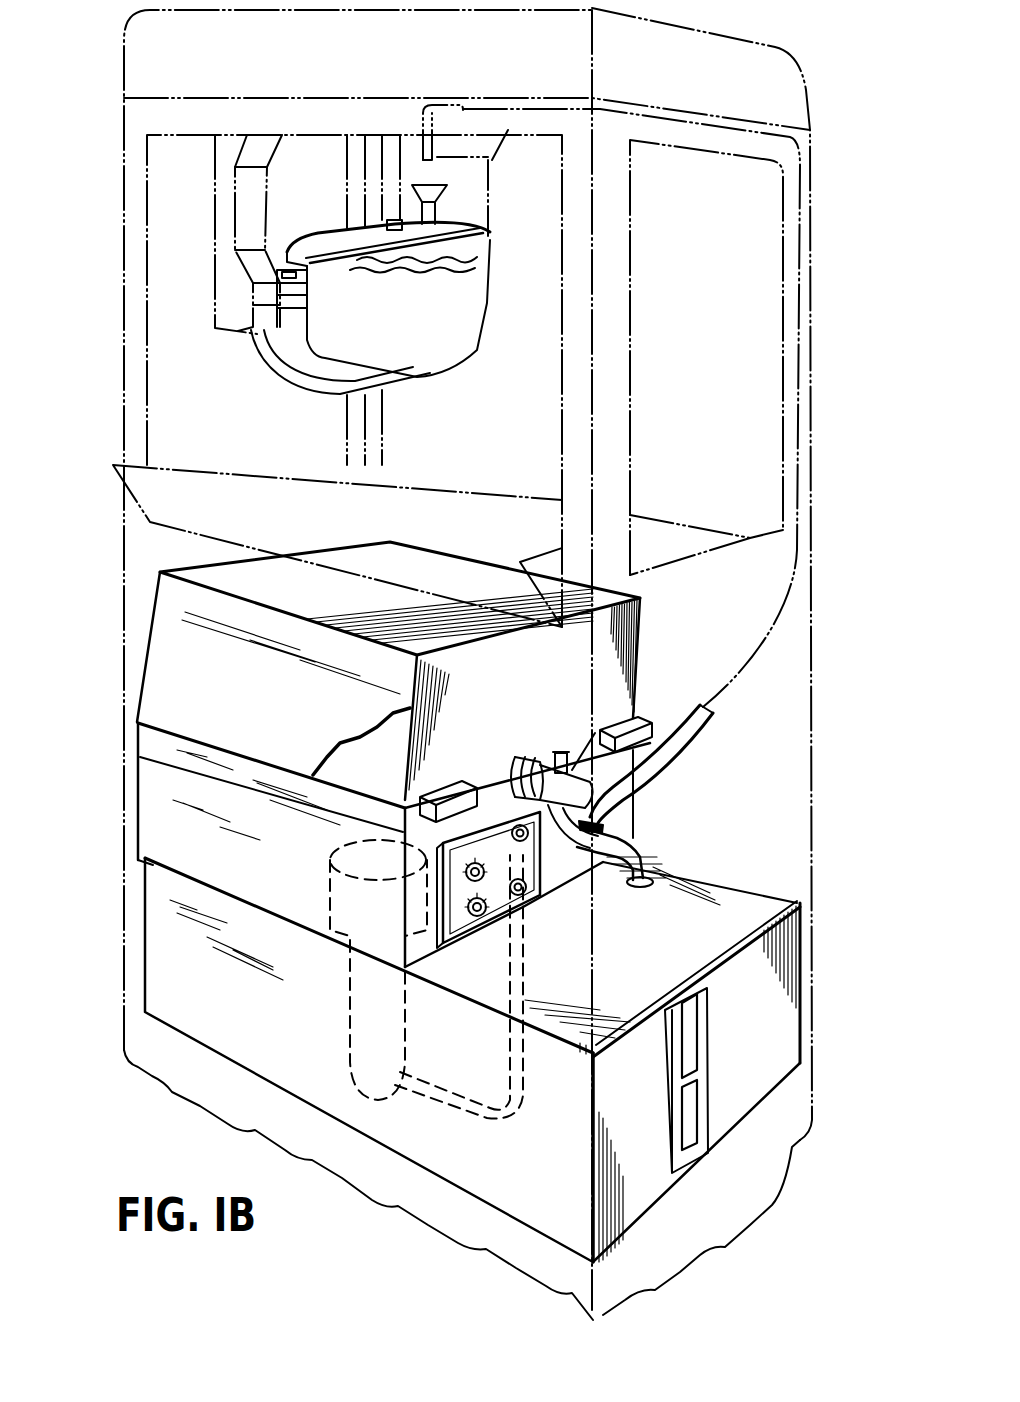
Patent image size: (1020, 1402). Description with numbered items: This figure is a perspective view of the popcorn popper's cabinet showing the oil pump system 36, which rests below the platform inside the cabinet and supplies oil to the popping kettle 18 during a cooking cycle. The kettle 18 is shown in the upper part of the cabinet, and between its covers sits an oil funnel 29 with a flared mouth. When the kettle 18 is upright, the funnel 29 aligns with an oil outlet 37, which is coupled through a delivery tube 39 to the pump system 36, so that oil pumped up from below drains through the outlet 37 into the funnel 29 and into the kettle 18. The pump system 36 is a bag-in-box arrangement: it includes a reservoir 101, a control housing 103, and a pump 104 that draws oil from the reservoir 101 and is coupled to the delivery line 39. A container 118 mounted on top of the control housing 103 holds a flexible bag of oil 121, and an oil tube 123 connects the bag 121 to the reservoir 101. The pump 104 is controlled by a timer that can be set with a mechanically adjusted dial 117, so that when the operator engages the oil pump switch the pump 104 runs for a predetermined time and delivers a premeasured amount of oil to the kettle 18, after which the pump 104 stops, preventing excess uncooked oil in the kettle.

The popping kettle 18 is at (462, 352).
The oil funnel 29 is at (447, 208).
The oil pump system 36 is at (180, 1068).
The oil outlet 37 is at (486, 160).
The delivery tube 39 is at (683, 756).
The reservoir 101 is at (160, 960).
The control housing 103 is at (142, 806).
The pump 104 is at (328, 916).
The mechanically adjusted dial 117 is at (488, 862).
The container 118 is at (156, 662).
The flexible bag of oil 121 is at (368, 764).
The oil tube 123 is at (633, 847).